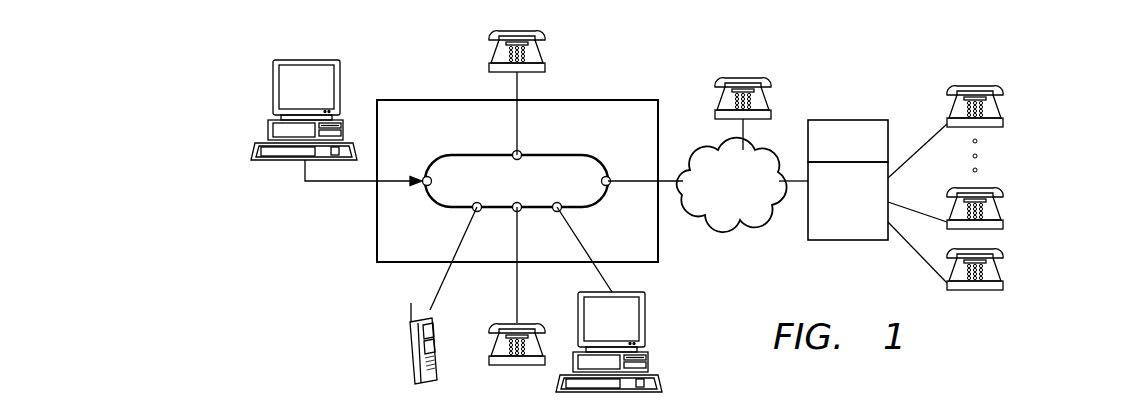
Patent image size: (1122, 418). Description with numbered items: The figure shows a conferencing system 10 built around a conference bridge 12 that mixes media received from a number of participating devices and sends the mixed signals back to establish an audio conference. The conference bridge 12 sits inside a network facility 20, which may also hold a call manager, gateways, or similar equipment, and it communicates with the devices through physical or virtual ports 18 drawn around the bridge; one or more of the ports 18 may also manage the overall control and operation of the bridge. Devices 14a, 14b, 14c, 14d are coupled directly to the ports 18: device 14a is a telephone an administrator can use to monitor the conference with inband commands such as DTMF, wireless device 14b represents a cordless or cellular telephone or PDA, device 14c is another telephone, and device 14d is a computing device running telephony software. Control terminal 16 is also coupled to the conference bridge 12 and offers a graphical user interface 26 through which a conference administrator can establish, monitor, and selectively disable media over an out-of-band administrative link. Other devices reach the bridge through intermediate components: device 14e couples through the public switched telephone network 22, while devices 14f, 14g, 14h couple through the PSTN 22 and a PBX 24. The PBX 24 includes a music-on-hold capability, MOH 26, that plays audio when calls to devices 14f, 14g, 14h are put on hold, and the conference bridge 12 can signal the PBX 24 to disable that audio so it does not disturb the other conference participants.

The conferencing system 10 is at (309, 282).
The conference bridge 12 is at (560, 156).
The device 14a is at (490, 65).
The wireless device 14b is at (408, 350).
The device 14c is at (517, 367).
The computing device running telephony software 14d is at (645, 322).
The device 14e is at (745, 75).
The device 14f is at (1005, 122).
The device 14g is at (1003, 226).
The device 14h is at (1003, 285).
The control terminal 16 is at (273, 88).
The ports 18 is at (425, 178).
The network facility 20 is at (600, 100).
The public switched telephone network (PSTN) 22 is at (759, 218).
The PBX 24 is at (850, 241).
The music-on-hold (MOH) / graphical user interface 26 is at (306, 71).